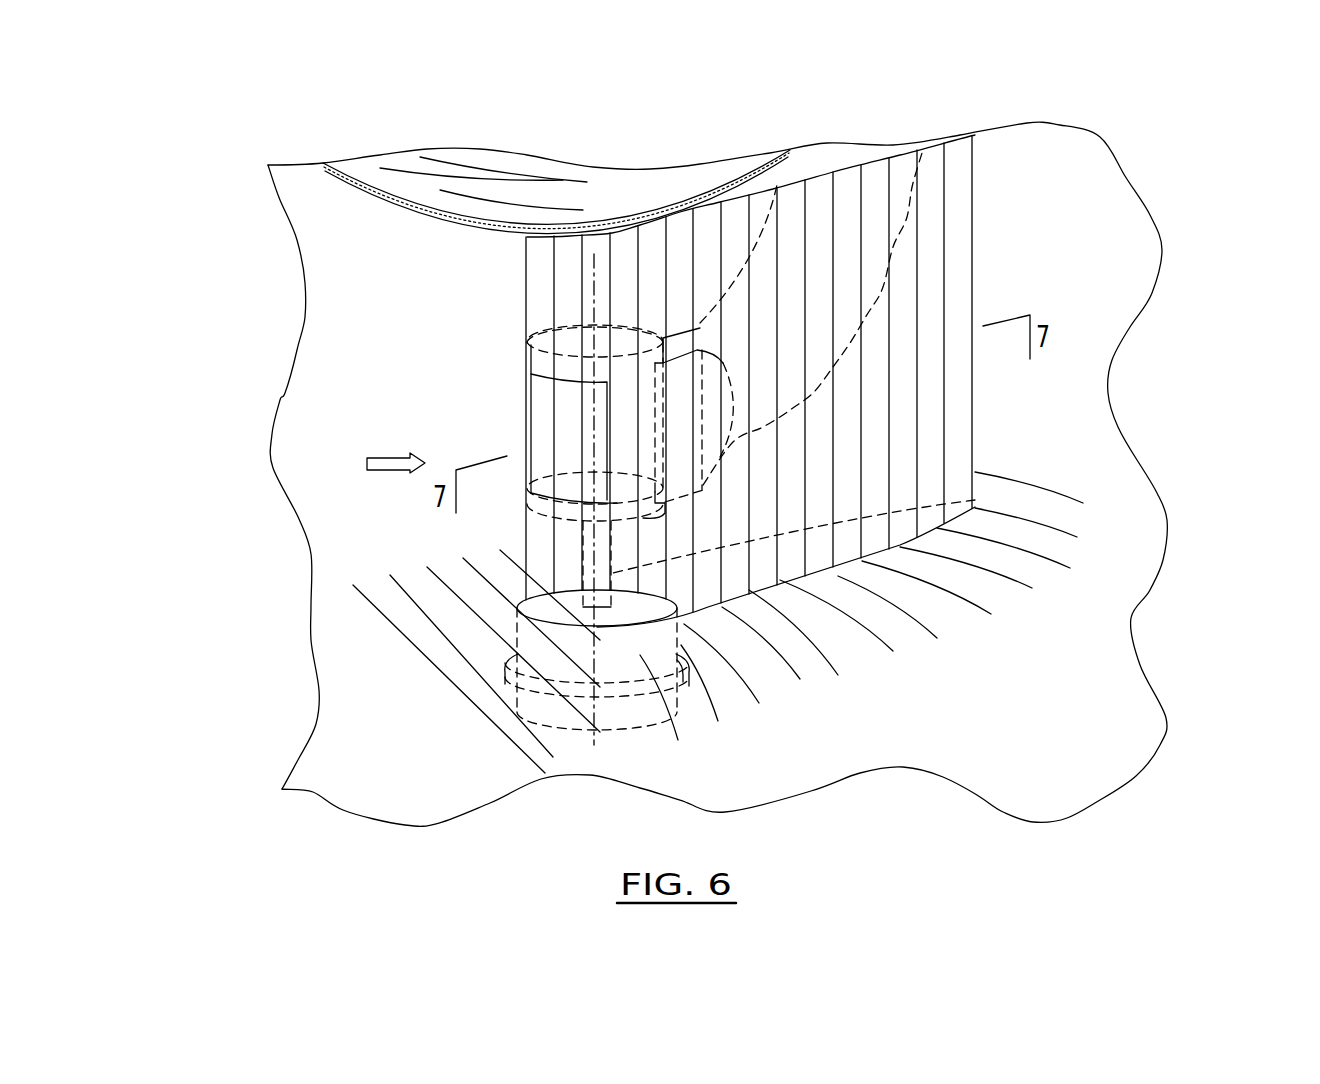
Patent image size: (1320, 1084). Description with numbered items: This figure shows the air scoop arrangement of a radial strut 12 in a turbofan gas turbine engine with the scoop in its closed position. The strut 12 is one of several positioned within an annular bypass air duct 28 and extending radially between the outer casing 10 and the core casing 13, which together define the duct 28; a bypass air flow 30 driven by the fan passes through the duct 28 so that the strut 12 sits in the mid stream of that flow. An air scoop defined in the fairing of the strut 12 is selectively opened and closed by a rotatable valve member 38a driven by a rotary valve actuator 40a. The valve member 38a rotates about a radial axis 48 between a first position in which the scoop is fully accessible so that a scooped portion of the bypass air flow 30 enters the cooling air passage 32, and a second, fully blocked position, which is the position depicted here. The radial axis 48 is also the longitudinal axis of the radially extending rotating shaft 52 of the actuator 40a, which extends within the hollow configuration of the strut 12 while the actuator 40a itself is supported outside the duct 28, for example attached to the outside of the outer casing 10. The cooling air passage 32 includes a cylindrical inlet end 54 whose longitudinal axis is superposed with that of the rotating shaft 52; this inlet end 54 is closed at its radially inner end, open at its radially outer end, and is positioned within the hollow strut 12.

The bypass air duct outer casing 10 is at (1098, 585).
The radial strut 12 is at (790, 556).
The core casing 13 is at (752, 187).
The annular bypass air duct 28 is at (343, 644).
The bypass air flow 30 is at (386, 472).
The cooling air passage 32 is at (867, 245).
The rotatable valve member 38a is at (550, 410).
The rotary valve actuator 40a is at (627, 717).
The radial axis 48 is at (594, 254).
The rotating shaft 52 is at (612, 569).
The cylindrical inlet end 54 is at (547, 340).